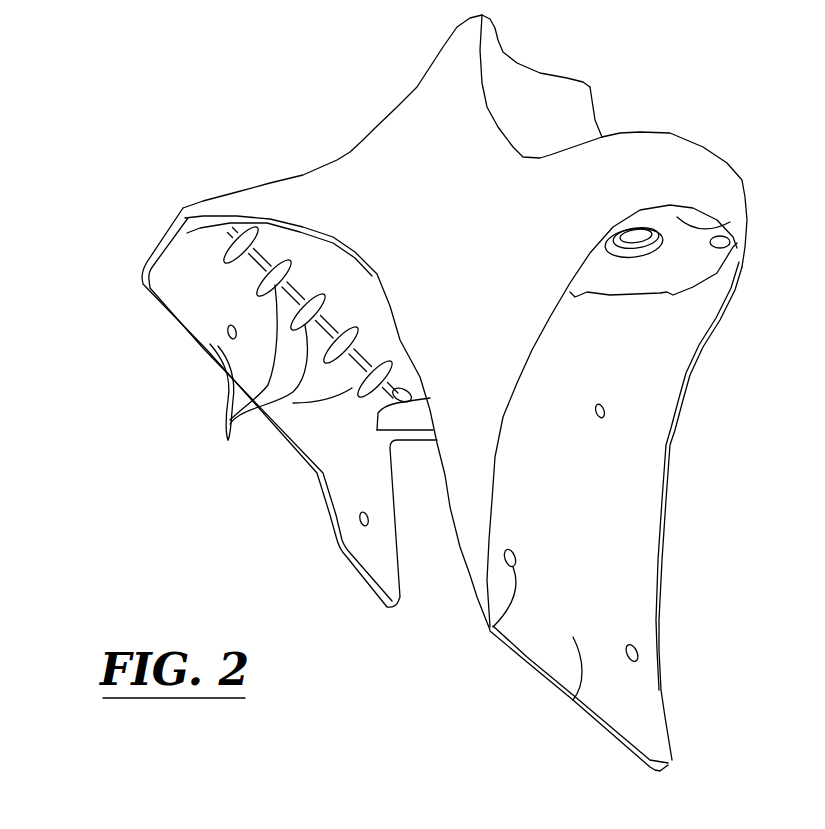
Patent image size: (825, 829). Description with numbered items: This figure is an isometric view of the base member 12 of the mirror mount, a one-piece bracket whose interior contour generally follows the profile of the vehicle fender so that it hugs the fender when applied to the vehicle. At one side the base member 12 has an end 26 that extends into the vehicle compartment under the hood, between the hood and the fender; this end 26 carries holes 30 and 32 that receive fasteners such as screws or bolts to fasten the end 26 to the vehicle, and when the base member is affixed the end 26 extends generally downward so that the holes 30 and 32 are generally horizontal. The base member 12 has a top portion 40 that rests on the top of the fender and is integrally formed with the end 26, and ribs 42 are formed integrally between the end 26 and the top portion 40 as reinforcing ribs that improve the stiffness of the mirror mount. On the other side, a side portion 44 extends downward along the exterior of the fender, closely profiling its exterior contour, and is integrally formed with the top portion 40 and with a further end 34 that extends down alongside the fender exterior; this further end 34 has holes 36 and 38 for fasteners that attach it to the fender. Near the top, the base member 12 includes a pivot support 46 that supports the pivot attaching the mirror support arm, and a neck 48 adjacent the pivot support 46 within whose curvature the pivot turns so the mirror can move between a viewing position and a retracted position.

The base member 12 is at (240, 103).
The end 26 is at (143, 277).
The hole 30 is at (228, 332).
The hole 32 is at (360, 520).
The further end 34 is at (570, 702).
The hole 36 is at (492, 633).
The hole 38 is at (636, 656).
The top portion 40 is at (333, 263).
The ribs 42 is at (228, 440).
The side portion 44 is at (593, 473).
The pivot support 46 is at (720, 237).
The neck 48 is at (577, 93).